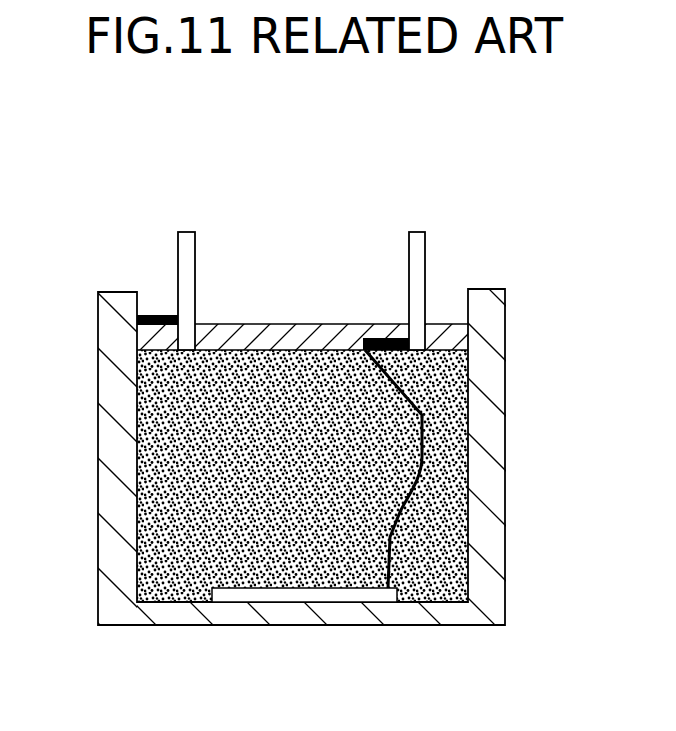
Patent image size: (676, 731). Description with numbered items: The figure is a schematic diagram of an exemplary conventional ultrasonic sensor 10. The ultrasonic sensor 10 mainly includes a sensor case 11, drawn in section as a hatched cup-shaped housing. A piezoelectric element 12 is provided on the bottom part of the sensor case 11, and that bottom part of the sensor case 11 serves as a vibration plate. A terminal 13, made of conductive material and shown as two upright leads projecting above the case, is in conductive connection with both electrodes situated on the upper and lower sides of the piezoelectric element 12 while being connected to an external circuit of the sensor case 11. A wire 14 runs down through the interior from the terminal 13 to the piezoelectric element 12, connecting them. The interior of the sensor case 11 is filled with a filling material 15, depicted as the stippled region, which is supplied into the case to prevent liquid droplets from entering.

The ultrasonic sensor 10 is at (50, 175).
The sensor case 11 is at (505, 545).
The piezoelectric element 12 is at (363, 594).
The terminal 13 is at (427, 237).
The wire 14 is at (422, 458).
The filling material 15 is at (183, 457).